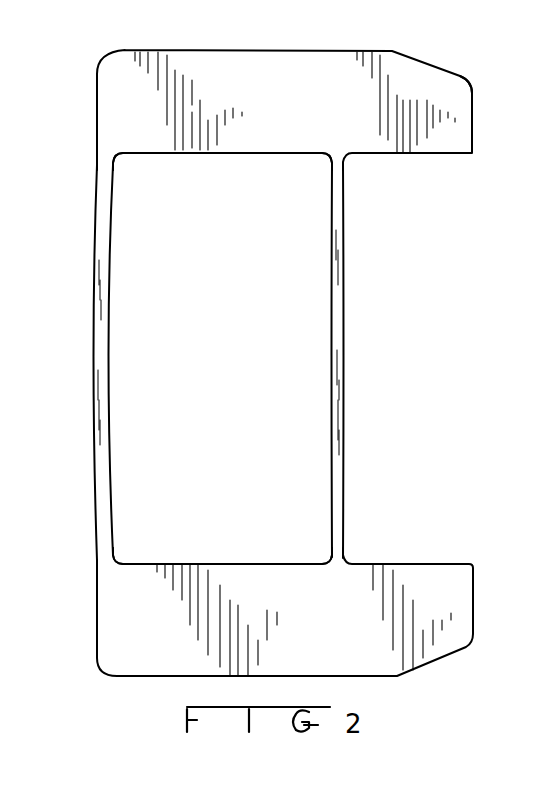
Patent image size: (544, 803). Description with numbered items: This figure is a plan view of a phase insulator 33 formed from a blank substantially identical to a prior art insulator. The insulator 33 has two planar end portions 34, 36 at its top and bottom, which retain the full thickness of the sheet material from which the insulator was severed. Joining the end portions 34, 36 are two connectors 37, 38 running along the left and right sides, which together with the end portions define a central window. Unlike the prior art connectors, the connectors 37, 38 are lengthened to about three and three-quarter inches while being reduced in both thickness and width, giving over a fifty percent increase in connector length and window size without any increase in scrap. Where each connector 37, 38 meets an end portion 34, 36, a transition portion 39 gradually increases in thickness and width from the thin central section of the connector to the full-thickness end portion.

The insulator 33 is at (473, 98).
The planar end portion 34 is at (125, 50).
The planar end portion 36 is at (110, 673).
The connector 37 is at (108, 323).
The connector 38 is at (343, 326).
The transition portion 39 is at (114, 160).